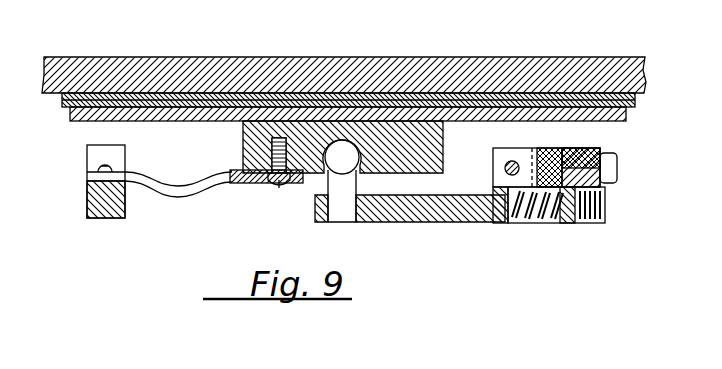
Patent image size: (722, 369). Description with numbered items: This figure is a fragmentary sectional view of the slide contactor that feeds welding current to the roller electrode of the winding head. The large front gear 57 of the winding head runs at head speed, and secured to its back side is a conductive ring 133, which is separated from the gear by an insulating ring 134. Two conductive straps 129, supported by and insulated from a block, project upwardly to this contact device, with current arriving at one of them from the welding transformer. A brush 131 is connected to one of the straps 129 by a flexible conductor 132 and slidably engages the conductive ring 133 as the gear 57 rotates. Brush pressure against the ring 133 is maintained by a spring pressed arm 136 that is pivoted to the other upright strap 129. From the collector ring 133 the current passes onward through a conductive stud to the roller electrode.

The front gear 57 is at (494, 70).
The conductive ring 133 is at (164, 92).
The insulating ring 134 is at (247, 99).
The brush 131 is at (314, 128).
The flexible conductor 132 is at (197, 188).
The conductive straps 129 is at (101, 210).
The spring pressed arm 136 is at (453, 218).